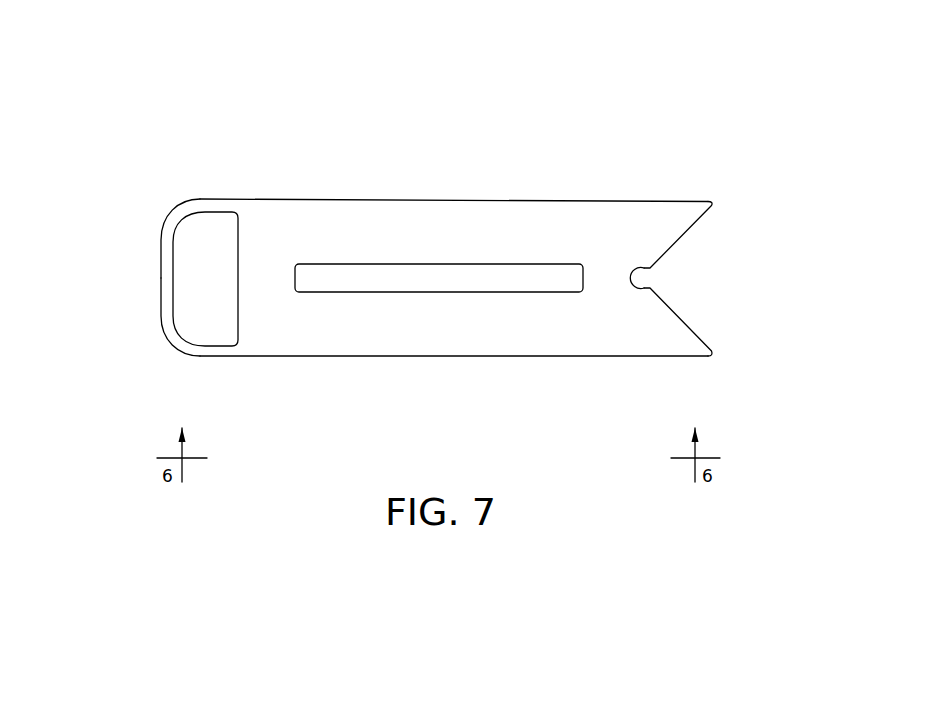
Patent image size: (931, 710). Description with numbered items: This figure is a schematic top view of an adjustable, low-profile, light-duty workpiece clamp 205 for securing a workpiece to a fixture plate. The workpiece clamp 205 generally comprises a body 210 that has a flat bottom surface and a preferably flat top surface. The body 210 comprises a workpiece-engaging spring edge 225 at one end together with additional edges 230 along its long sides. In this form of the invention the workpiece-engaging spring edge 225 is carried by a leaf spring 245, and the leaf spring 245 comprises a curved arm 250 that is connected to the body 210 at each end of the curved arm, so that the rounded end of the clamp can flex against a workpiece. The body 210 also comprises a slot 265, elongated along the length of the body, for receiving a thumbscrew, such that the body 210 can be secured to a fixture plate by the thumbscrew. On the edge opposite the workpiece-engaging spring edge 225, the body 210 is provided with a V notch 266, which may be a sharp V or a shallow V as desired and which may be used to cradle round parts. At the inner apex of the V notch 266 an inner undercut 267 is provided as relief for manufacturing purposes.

The workpiece clamp 205 is at (110, 88).
The body 210 is at (538, 223).
The workpiece-engaging spring edge 225 is at (158, 271).
The additional edges 230 is at (430, 196).
The leaf spring 245 is at (164, 338).
The curved arm 250 is at (162, 298).
The slot 265 is at (328, 291).
The V notch 266 is at (688, 256).
The inner undercut 267 is at (654, 278).